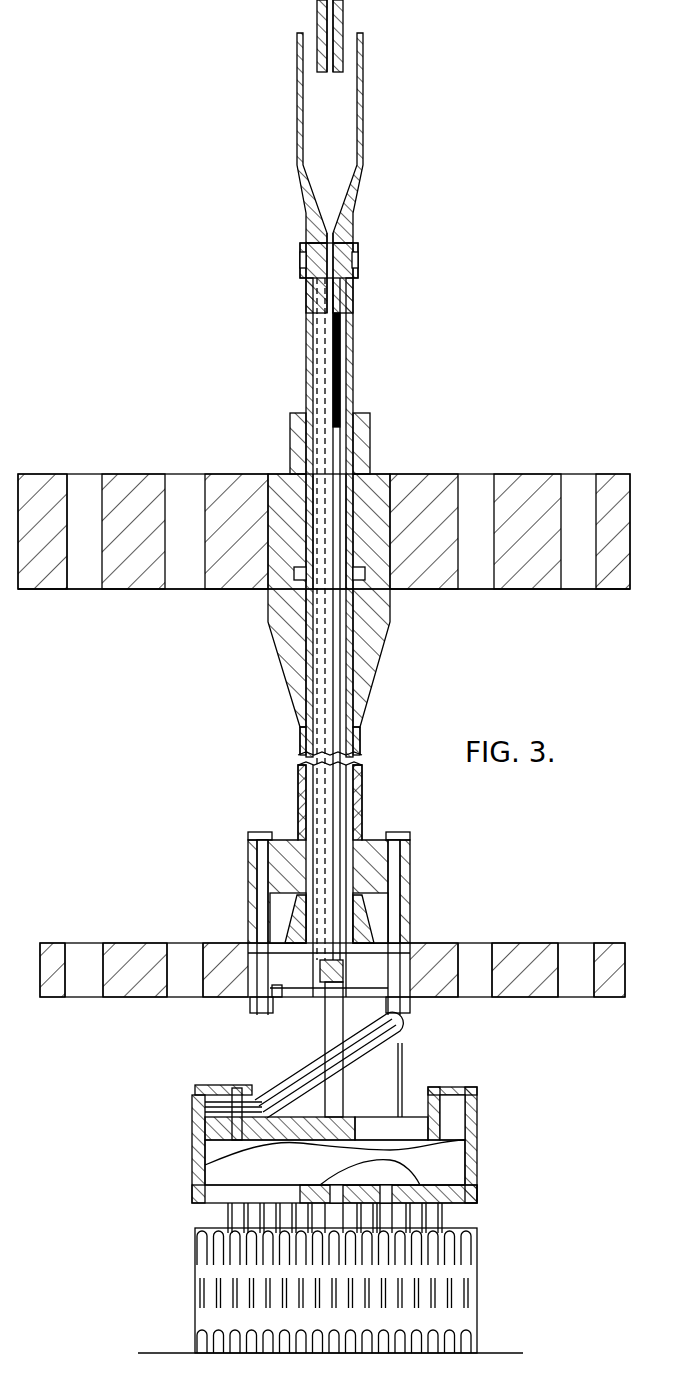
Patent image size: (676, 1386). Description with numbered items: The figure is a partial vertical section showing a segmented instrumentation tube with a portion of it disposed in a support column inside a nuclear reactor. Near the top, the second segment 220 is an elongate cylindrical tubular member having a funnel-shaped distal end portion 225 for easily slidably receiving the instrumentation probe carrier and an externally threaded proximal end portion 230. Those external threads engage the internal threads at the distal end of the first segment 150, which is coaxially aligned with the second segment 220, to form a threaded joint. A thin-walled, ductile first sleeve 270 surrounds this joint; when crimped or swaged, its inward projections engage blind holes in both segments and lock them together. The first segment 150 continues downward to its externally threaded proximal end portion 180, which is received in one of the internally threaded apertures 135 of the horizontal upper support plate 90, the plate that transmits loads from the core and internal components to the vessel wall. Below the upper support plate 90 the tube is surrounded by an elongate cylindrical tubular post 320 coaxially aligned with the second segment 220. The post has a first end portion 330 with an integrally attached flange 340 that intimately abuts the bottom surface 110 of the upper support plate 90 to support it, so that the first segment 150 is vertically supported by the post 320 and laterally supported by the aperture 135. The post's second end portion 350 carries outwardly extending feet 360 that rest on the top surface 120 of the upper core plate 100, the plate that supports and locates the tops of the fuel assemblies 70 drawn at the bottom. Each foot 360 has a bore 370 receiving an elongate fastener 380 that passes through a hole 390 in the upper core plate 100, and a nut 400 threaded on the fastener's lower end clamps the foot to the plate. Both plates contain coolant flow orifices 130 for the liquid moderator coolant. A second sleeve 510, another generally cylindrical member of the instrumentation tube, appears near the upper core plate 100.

The fuel assembly 70 is at (477, 1290).
The upper support plate 90 is at (530, 490).
The upper core plate 100 is at (663, 929).
The bottom surface 110 is at (530, 590).
The top surface 120 is at (525, 945).
The coolant flow orifice 130 is at (68, 575).
The internally threaded aperture 135 is at (353, 492).
The first segment 150 is at (316, 330).
The proximal end portion 180 is at (306, 386).
The second segment 220 is at (298, 205).
The funnel-shaped distal end portion 225 is at (297, 89).
The proximal end portion 230 is at (303, 222).
The first sleeve 270 is at (358, 260).
The post 320 is at (362, 793).
The first end portion 330 is at (370, 693).
The flange 340 is at (386, 660).
The second end portion 350 is at (298, 795).
The foot 360 is at (250, 885).
The bore 370 is at (262, 910).
The fastener 380 is at (248, 836).
The hole 390 is at (250, 1002).
The nut 400 is at (278, 997).
The second sleeve 510 is at (363, 985).